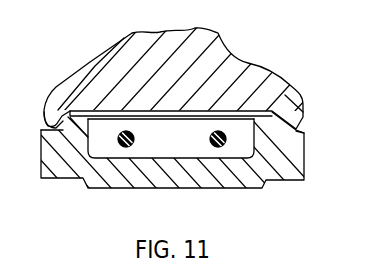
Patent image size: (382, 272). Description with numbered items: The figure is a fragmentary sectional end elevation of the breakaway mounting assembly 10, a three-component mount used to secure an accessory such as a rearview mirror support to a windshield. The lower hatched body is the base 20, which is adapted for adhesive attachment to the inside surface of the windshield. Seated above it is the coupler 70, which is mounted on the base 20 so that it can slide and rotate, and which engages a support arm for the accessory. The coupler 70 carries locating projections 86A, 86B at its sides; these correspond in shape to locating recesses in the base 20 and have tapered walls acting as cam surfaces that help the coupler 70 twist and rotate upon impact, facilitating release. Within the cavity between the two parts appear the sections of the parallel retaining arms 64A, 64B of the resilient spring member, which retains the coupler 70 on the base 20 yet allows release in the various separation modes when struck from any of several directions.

The breakaway mounting assembly 10 is at (313, 71).
The base 20 is at (307, 161).
The coupler 70 is at (245, 62).
The locating projection 86A is at (301, 120).
The locating projection 86B is at (42, 120).
The retaining arm 64A is at (218, 148).
The retaining arm 64B is at (122, 148).